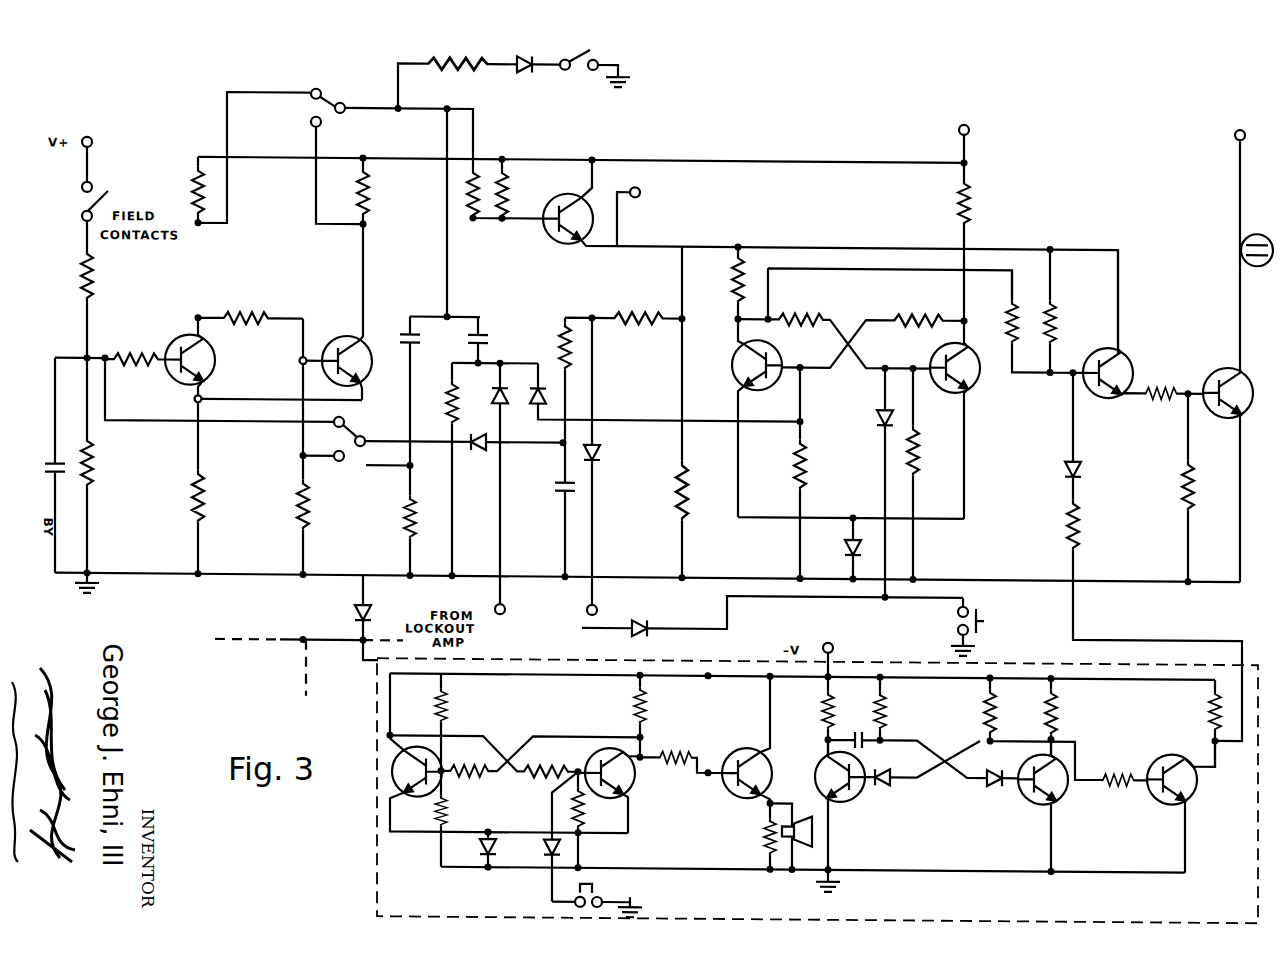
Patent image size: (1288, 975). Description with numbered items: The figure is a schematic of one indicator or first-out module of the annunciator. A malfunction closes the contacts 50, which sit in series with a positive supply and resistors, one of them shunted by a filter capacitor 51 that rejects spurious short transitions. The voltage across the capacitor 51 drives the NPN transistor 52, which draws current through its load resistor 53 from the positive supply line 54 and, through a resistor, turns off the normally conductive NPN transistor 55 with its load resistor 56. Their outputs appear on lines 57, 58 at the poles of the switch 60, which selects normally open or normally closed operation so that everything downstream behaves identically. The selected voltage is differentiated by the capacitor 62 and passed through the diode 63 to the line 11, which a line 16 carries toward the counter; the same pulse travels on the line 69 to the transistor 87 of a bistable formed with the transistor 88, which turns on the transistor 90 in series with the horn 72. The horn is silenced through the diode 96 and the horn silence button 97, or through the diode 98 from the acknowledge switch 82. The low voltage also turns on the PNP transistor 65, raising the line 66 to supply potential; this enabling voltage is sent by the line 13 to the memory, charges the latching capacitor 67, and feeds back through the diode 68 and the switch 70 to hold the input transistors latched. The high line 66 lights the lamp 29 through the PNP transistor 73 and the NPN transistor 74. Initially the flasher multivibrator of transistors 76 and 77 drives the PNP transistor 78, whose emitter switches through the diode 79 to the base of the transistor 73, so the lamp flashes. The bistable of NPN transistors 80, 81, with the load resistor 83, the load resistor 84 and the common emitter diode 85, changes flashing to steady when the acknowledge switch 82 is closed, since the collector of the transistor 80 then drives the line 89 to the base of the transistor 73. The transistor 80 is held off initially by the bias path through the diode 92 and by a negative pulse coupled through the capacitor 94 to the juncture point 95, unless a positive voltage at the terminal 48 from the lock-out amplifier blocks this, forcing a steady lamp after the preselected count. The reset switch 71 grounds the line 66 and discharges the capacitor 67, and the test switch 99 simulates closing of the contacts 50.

The bus line 11 is at (333, 647).
The line to memory circuit 13 is at (622, 204).
The line 16 is at (302, 653).
The lamp 29 is at (1272, 262).
The terminal 48 is at (504, 607).
The contacts 50 is at (82, 198).
The capacitor 51 is at (48, 464).
The NPN transistor 52 is at (178, 343).
The load resistor 53 is at (192, 198).
The positive voltage supply line 54 is at (900, 163).
The NPN transistor 55 is at (344, 350).
The load resistor 56 is at (370, 204).
The line 57 is at (262, 96).
The line 58 is at (322, 133).
The switch 60 is at (333, 103).
The capacitor 62 is at (403, 332).
The diode 63 is at (358, 606).
The PNP transistor 65 is at (545, 239).
The line 66 is at (865, 251).
The capacitor 67 is at (553, 491).
The diode 68 is at (484, 453).
The line 69 is at (370, 665).
The switch 70 is at (363, 428).
The reset switch 71 is at (582, 607).
The horn 72 is at (800, 818).
The PNP transistor 73 is at (1130, 363).
The NPN transistor 74 is at (1250, 375).
The transistor 76 is at (845, 802).
The transistor 77 is at (1060, 794).
The PNP transistor 78 is at (1172, 752).
The diode 79 is at (1083, 474).
The NPN transistor 80 is at (750, 387).
The NPN transistor 81 is at (970, 387).
The acknowledge switch 82 is at (958, 620).
The load resistor 83 is at (973, 208).
The load resistor 84 is at (733, 281).
The diode 85 is at (845, 551).
The transistor 87 is at (415, 798).
The transistor 88 is at (636, 797).
The line 89 is at (860, 269).
The transistor 90 is at (738, 798).
The diode 92 is at (541, 383).
The capacitor 94 is at (489, 334).
The juncture point 95 is at (484, 360).
The diode 96 is at (533, 848).
The horn silence push button 97 is at (570, 909).
The diode 98 is at (655, 627).
The test switch 99 is at (598, 56).